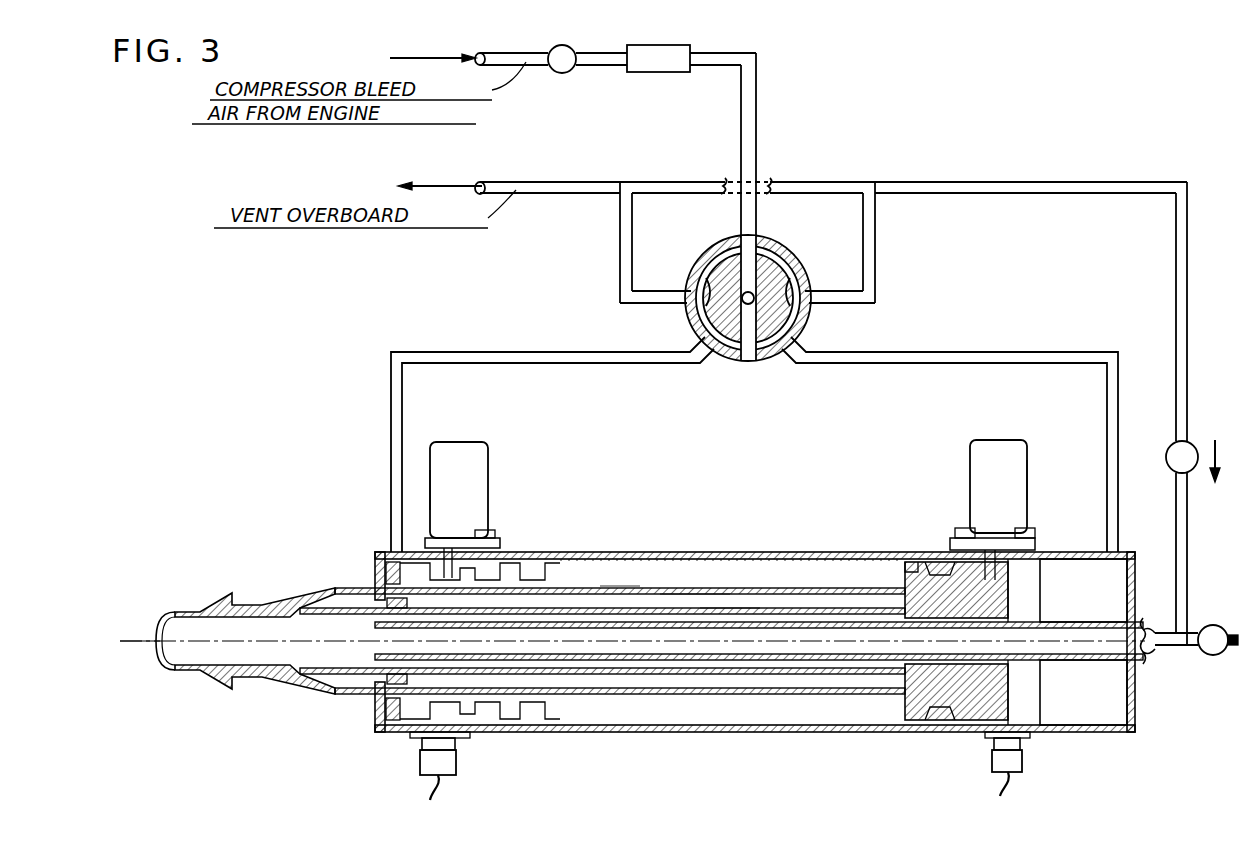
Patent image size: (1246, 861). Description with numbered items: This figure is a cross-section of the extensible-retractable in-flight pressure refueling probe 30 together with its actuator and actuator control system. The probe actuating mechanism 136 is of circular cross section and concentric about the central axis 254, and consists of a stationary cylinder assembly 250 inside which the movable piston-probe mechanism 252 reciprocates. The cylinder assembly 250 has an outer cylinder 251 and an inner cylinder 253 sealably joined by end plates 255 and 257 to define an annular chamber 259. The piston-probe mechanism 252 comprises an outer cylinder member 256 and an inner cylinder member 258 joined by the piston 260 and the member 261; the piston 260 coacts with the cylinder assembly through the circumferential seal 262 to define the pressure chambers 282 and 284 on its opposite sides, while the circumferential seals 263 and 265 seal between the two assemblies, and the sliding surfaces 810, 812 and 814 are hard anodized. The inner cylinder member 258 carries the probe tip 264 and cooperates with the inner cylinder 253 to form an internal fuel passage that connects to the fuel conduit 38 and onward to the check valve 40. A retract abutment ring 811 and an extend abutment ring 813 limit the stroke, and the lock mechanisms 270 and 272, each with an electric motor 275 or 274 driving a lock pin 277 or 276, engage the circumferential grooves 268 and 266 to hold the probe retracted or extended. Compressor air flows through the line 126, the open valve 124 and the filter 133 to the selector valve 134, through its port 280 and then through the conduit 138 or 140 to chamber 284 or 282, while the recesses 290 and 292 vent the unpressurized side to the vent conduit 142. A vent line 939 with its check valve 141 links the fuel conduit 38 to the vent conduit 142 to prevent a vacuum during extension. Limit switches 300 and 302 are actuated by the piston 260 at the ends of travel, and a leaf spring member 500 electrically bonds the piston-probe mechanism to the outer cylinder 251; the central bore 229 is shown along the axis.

The in-flight pressure refueling probe 30 is at (205, 558).
The fuel conduit 38 is at (1156, 650).
The check valve 40 is at (1214, 656).
The valve 124 is at (527, 64).
The line 126 is at (752, 100).
The filter 133 is at (657, 62).
The selector valve 134 is at (747, 292).
The probe actuating mechanism 136 is at (643, 634).
The conduit 138 is at (421, 358).
The conduit 140 is at (1057, 362).
The check valve 141 is at (1186, 444).
The vent conduit 142 is at (568, 186).
The central bore 229 is at (786, 649).
The cylinder assembly 250 is at (681, 572).
The outer cylinder 251 is at (623, 548).
The piston-probe mechanism 252 is at (694, 586).
The inner cylinder 253 is at (620, 643).
The axis 254 is at (248, 645).
The end plate 255 is at (374, 580).
The outer cylinder member 256 is at (723, 592).
The end plate 257 is at (1130, 582).
The inner cylinder member 258 is at (320, 618).
The annular chamber 259 is at (789, 574).
The piston 260 is at (556, 710).
The member 261 is at (301, 598).
The circumferential seal 262 is at (911, 565).
The circumferential seal 263 is at (386, 702).
The probe tip 264 is at (213, 682).
The circumferential seal 265 is at (392, 672).
The circumferential groove 266 is at (921, 571).
The circumferential groove 268 is at (1012, 590).
The lock mechanism 270 is at (1016, 482).
The lock mechanism 272 is at (493, 486).
The electric motor 274 is at (474, 481).
The electric motor 275 is at (1006, 462).
The lock pin 276 is at (454, 556).
The lock pin 277 is at (990, 576).
The conduit or port 280 is at (748, 346).
The pressure chamber 282 is at (1073, 566).
The pressure chamber 284 is at (584, 582).
The recess 290 is at (714, 274).
The recess 292 is at (790, 278).
The limit switch 300 is at (1022, 762).
The limit switch 302 is at (434, 761).
The leaf spring member 500 is at (861, 576).
The sliding surface 810 is at (780, 726).
The retract abutment ring 811 is at (1029, 566).
The sliding surface 812 is at (578, 689).
The extend abutment ring 813 is at (379, 564).
The sliding surface 814 is at (612, 586).
The vent line 939 is at (1136, 186).